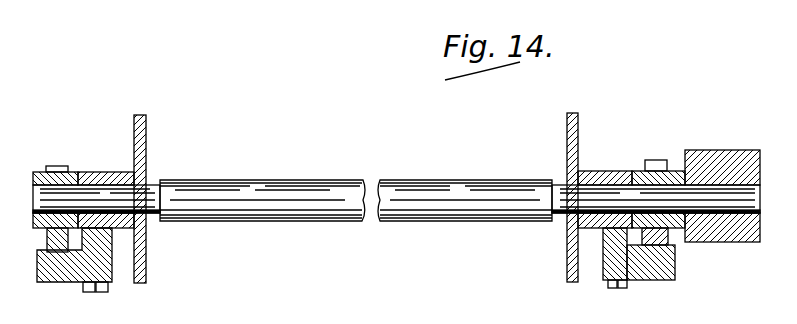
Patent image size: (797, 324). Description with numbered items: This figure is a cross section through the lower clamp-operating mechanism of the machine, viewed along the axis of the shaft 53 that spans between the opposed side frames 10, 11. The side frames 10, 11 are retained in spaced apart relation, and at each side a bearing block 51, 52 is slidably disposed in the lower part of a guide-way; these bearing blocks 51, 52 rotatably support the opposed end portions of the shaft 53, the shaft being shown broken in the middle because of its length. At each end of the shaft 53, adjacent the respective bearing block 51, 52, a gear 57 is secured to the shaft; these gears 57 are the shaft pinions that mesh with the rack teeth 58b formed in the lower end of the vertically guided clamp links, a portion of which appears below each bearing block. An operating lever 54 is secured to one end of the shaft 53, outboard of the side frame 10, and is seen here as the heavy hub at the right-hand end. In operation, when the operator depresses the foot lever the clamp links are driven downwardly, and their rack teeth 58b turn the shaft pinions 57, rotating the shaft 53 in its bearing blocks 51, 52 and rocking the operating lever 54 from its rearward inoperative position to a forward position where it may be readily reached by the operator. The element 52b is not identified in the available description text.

The side frame 10 is at (567, 263).
The side frame 11 is at (146, 275).
The bearing block 51 is at (676, 267).
The bearing block 52 is at (37, 270).
The hub flange 52b is at (45, 283).
The shaft 53 is at (323, 190).
The operating lever 54 is at (742, 243).
The gear 57 is at (58, 166).
The rack teeth 58b is at (656, 258).